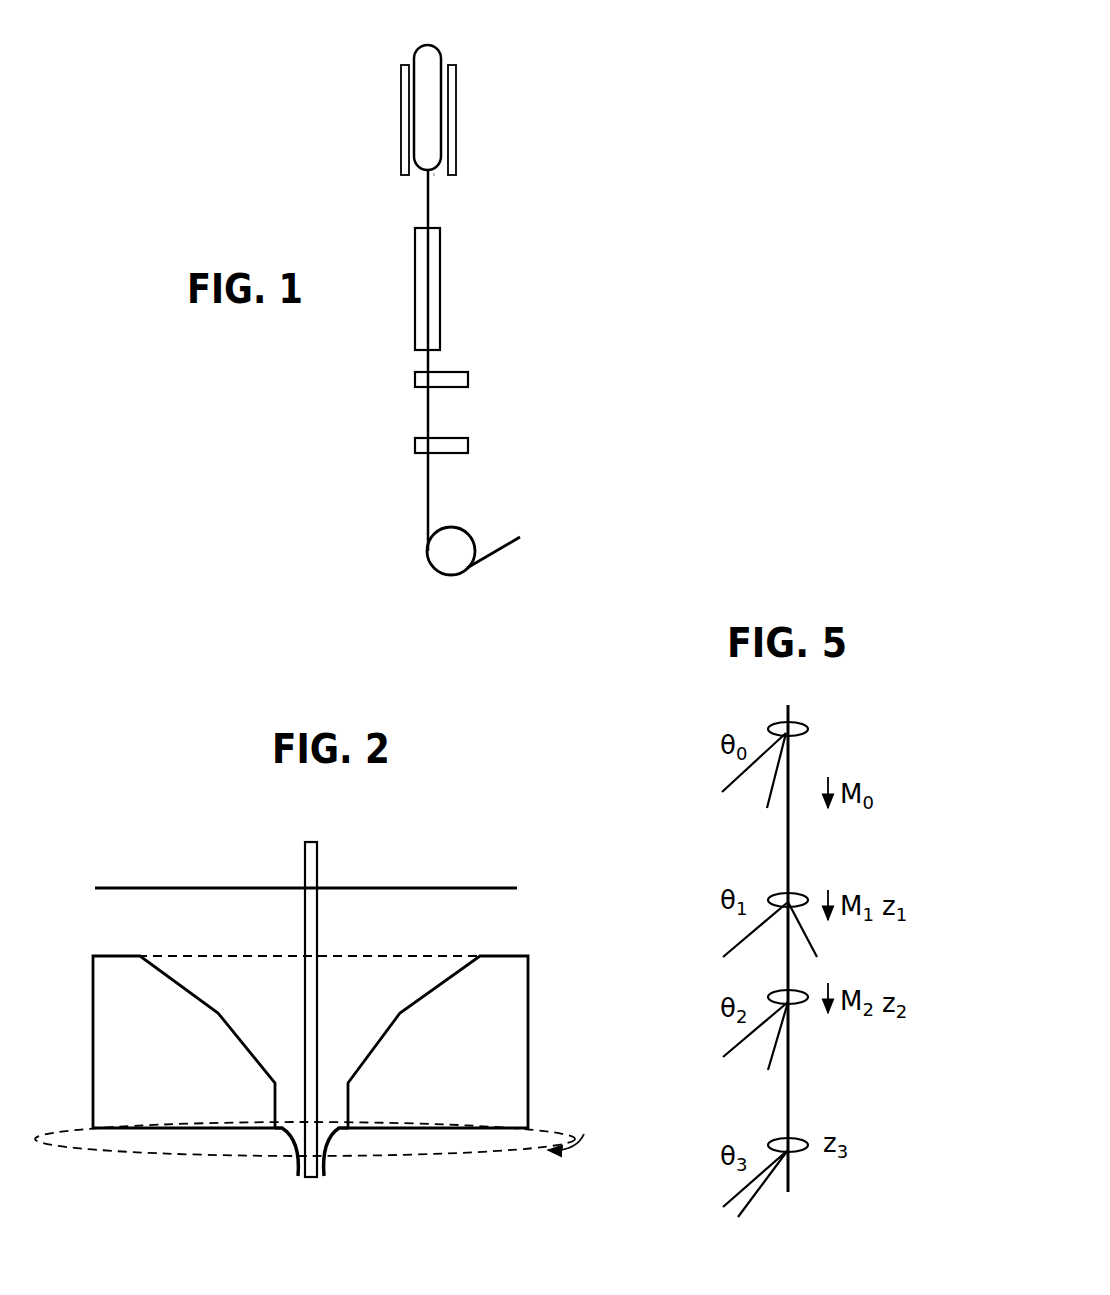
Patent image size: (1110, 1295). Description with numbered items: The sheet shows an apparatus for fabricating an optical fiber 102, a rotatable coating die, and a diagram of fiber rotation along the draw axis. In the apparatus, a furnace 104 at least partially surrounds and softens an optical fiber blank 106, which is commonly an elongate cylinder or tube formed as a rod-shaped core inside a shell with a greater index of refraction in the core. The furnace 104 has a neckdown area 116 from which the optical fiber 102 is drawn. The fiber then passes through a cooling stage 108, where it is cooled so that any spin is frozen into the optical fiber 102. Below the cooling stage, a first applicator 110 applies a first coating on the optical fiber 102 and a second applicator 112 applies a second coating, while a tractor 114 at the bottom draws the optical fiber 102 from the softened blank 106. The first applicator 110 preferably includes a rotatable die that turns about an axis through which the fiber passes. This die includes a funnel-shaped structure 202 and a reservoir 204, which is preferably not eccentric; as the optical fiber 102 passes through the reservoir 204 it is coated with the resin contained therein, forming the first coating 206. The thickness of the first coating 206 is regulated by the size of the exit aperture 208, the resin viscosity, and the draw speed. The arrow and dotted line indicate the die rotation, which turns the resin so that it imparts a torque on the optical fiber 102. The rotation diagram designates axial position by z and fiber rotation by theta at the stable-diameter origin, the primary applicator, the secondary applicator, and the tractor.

In FIG. 1, the optical fiber 102 is at (427, 197).
In FIG. 2, the optical fiber 102 is at (312, 910).
In FIG. 1, the furnace 104 is at (478, 102).
In FIG. 1, the optical fiber blank 106 is at (433, 45).
In FIG. 1, the cooling stage 108 is at (440, 283).
In FIG. 1, the first applicator 110 is at (468, 375).
In FIG. 1, the second applicator 112 is at (468, 442).
In FIG. 1, the tractor 114 is at (427, 553).
In FIG. 1, the neckdown area 116 is at (437, 173).
In FIG. 2, the funnel-shaped structure 202 is at (523, 1028).
In FIG. 2, the reservoir 204 is at (352, 967).
In FIG. 2, the first coating 206 is at (562, 928).
In FIG. 2, the exit aperture 208 is at (288, 1127).